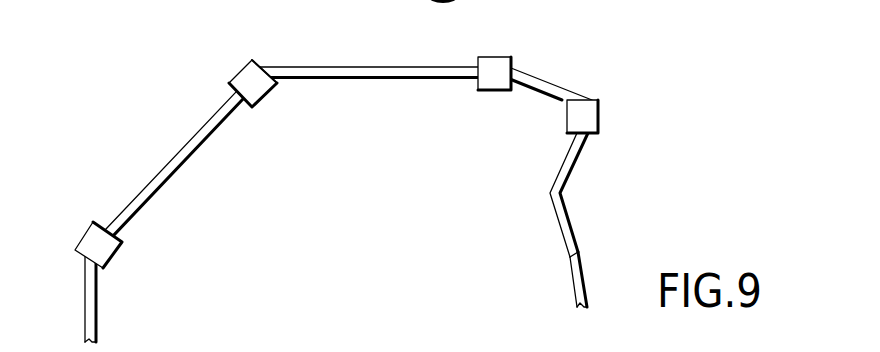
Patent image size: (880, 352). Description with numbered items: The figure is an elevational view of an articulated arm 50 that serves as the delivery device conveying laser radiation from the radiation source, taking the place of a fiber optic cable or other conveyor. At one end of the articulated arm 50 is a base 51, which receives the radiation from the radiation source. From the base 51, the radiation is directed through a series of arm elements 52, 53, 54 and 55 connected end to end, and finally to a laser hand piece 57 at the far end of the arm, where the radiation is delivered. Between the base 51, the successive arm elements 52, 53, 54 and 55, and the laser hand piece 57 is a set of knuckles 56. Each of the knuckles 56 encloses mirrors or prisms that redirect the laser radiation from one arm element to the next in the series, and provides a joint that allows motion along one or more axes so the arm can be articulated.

The articulated arm 50 is at (286, 199).
The base 51 is at (92, 301).
The arm element 52 is at (186, 157).
The arm element 53 is at (360, 73).
The arm element 54 is at (555, 82).
The arm element 55 is at (573, 153).
The knuckles 56 is at (94, 237).
The laser hand piece 57 is at (578, 267).